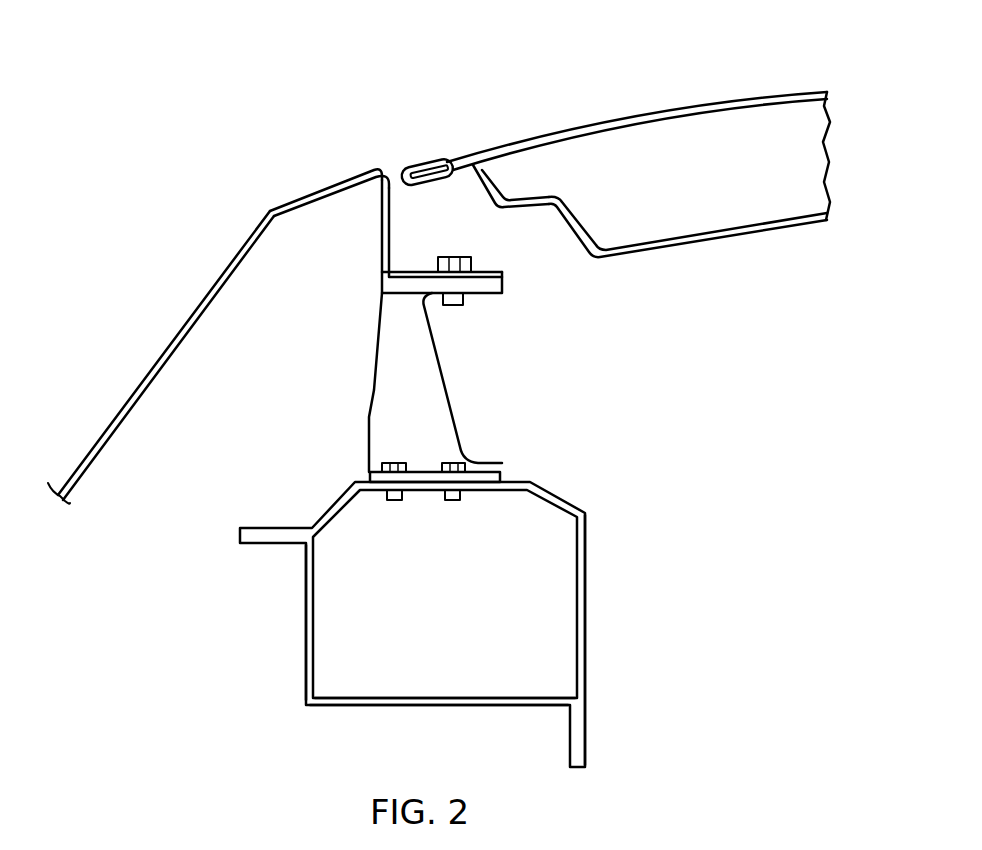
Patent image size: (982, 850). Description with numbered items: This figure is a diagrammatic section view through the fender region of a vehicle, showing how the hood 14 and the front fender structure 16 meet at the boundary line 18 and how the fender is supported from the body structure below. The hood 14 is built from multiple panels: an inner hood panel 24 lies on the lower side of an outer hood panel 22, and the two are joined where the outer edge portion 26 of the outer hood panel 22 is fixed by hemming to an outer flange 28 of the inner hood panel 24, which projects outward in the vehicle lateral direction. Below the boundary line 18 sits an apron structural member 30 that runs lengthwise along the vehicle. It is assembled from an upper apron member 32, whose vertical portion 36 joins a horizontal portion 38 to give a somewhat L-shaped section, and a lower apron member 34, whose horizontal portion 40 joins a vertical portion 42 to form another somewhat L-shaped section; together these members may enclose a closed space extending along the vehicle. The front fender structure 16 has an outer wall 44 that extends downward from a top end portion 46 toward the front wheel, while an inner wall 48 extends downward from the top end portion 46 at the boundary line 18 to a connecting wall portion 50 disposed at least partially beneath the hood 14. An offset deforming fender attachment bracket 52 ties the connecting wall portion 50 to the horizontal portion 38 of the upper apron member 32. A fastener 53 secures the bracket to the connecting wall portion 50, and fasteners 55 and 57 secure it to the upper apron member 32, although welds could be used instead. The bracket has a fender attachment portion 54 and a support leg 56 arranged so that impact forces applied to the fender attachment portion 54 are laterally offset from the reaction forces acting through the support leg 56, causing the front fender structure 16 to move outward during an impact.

The hood 14 is at (615, 153).
The front fender structure 16 is at (306, 320).
The boundary line 18 is at (373, 125).
The outer hood panel 22 is at (706, 107).
The inner hood panel 24 is at (714, 234).
The outer edge portion 26 is at (433, 168).
The outer flange 28 is at (485, 178).
The apron structural member 30 is at (397, 600).
The upper apron member 32 is at (412, 598).
The lower apron member 34 is at (386, 734).
The vertical portion 36 is at (587, 603).
The horizontal portion 38 is at (484, 494).
The horizontal portion 40 is at (442, 697).
The vertical portion 42 is at (305, 600).
The outer wall 44 is at (157, 341).
The top end portion 46 is at (353, 177).
The inner wall 48 is at (380, 228).
The connecting wall portion 50 is at (500, 274).
The offset deforming fender attachment bracket 52 is at (320, 382).
The fastener 53 is at (453, 256).
The fender attachment portion 54 is at (443, 306).
The fastener 55 is at (393, 462).
The support leg 56 is at (497, 378).
The fastener 57 is at (458, 462).